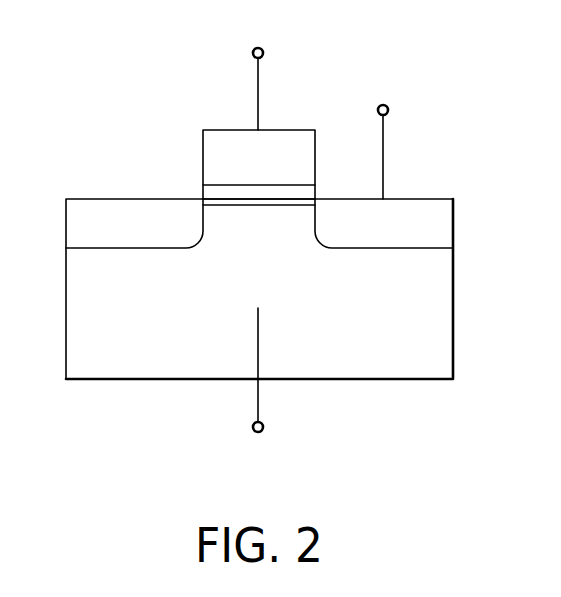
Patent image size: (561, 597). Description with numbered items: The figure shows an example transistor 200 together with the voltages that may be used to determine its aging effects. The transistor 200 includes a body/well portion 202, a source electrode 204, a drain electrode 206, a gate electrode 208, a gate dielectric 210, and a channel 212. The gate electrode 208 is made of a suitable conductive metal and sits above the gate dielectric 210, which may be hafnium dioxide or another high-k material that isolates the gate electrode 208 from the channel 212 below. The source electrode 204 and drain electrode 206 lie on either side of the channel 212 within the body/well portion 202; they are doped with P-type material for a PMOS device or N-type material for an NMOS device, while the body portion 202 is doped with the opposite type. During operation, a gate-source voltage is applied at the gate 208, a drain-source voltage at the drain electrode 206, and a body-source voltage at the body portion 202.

The transistor 200 is at (70, 64).
The body/well portion 202 is at (153, 350).
The source electrode 204 is at (84, 198).
The drain electrode 206 is at (428, 210).
The gate electrode 208 is at (297, 133).
The gate dielectric 210 is at (218, 190).
The channel 212 is at (262, 203).